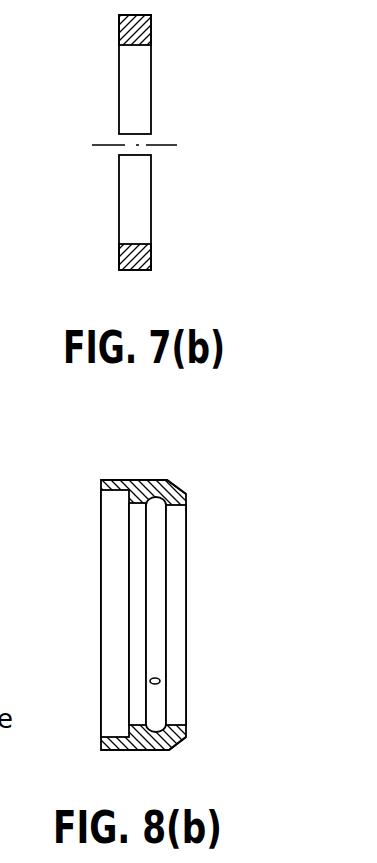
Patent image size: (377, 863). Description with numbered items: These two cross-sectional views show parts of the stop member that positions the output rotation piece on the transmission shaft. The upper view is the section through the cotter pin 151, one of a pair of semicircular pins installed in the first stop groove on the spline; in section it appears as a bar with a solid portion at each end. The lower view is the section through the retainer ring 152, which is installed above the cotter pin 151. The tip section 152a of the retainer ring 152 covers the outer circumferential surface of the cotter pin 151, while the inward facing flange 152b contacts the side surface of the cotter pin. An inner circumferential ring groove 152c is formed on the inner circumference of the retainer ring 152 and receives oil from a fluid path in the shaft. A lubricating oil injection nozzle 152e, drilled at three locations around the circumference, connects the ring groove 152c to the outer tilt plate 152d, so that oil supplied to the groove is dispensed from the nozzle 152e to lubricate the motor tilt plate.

The cotter pin 151 is at (184, 31).
The retainer ring 152 is at (150, 596).
The tip section 152a is at (106, 488).
The inward facing flange 152b is at (143, 507).
The inner circumferential ring groove 152c is at (154, 721).
The outer tilt plate 152d is at (168, 746).
The lubricating oil injection nozzle 152e is at (177, 488).